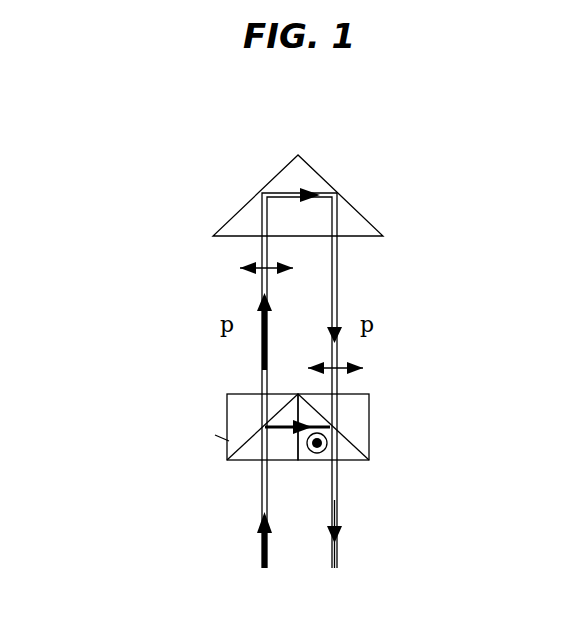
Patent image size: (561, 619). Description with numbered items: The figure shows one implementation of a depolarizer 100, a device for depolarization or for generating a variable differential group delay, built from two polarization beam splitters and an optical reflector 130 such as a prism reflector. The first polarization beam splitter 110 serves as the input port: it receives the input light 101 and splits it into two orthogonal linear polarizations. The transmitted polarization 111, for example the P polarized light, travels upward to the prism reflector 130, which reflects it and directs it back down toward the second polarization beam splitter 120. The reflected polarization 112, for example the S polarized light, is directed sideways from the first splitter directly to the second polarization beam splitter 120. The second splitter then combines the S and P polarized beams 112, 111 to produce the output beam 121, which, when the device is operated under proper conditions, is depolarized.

The depolarizer 100 is at (145, 252).
The optical reflector 130 is at (312, 170).
The transmitted polarization 111 is at (262, 372).
The second polarization beam splitter 120 is at (370, 410).
The first polarization beam splitter 110 is at (229, 442).
The reflected polarization 112 is at (282, 432).
The input light 101 is at (262, 498).
The output beam 121 is at (335, 517).